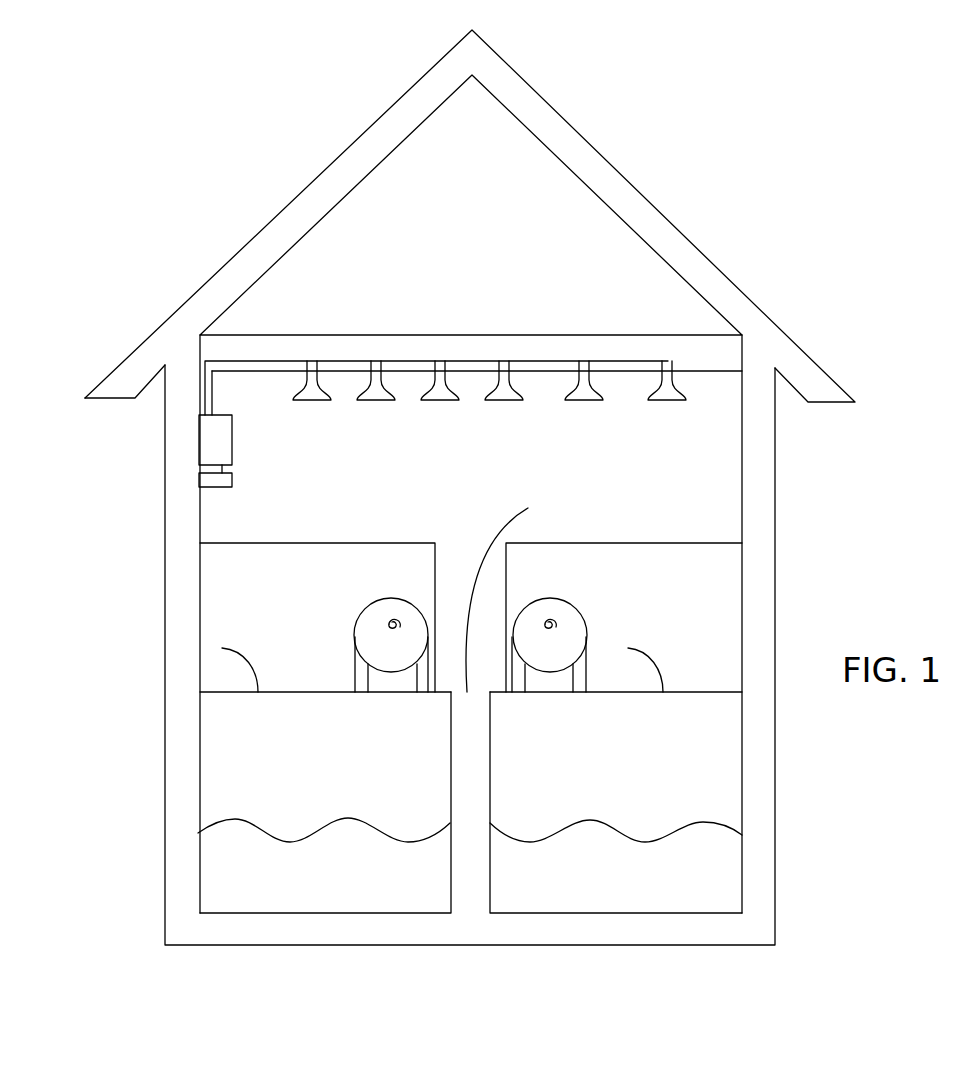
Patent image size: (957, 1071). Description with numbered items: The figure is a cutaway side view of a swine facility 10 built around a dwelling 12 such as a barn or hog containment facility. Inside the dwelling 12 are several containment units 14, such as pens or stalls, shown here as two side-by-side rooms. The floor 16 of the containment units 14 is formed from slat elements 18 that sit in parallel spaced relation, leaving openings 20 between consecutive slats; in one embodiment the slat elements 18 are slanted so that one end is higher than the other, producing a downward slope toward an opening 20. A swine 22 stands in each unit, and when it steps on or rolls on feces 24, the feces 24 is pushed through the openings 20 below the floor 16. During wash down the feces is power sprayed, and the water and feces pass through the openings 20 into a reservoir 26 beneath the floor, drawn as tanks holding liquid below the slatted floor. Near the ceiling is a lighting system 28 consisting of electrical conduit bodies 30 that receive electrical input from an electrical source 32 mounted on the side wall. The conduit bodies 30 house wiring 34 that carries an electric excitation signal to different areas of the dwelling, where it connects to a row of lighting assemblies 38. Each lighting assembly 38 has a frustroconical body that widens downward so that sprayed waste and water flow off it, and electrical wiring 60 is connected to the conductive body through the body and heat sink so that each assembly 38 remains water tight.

The swine facility 10 is at (97, 557).
The dwelling 12 is at (257, 150).
The containment units 14 is at (209, 557).
The floor 16 is at (510, 594).
The slat elements 18 is at (267, 692).
The openings 20 is at (431, 662).
The swine 22 is at (388, 612).
The feces 24 is at (253, 848).
The reservoir 26 is at (248, 731).
The lighting system 28 is at (407, 315).
The electrical conduit bodies 30 is at (292, 352).
The electrical source 32 is at (228, 444).
The wiring 34 is at (314, 362).
The lighting assembly 38 is at (267, 388).
The electrical wiring 60 is at (590, 378).